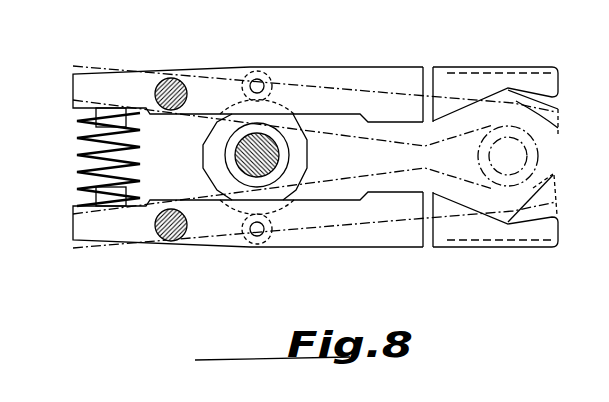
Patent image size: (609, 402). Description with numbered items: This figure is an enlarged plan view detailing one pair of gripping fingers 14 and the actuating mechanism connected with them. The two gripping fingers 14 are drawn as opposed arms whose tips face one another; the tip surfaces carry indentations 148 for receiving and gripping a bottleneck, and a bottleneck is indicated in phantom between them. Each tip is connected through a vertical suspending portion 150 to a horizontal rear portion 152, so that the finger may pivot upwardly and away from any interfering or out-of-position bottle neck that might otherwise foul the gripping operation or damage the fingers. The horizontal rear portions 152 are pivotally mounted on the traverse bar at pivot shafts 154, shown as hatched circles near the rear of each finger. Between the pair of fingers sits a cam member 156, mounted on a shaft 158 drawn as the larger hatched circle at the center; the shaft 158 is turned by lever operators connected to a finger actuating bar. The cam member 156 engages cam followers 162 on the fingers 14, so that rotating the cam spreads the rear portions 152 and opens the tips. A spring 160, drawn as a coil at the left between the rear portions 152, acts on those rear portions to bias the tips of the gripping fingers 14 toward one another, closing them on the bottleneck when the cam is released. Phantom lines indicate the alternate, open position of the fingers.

The gripping fingers 14 is at (559, 84).
The indentations 148 is at (530, 178).
The vertical suspending portions 150 is at (427, 75).
The horizontal rear portions 152 is at (356, 66).
The pivot shafts 154 is at (174, 78).
The cam member 156 is at (305, 158).
The shaft 158 is at (268, 140).
The spring 160 is at (82, 170).
The cam followers 162 is at (248, 74).